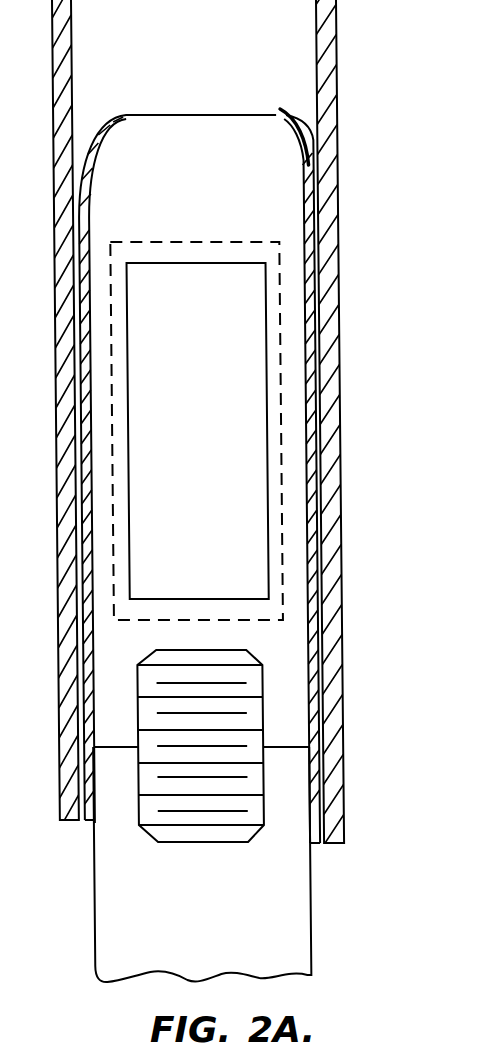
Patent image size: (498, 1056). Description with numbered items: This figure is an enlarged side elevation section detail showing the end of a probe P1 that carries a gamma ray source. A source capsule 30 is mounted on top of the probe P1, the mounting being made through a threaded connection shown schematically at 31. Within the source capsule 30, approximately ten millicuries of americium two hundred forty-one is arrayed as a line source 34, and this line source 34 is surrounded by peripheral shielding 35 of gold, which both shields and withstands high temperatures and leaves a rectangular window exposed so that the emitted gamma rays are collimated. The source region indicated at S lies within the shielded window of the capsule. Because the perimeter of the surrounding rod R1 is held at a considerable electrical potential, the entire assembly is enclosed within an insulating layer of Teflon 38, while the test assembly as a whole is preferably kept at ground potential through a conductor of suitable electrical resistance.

The source capsule 30 is at (277, 647).
The threaded connection 31 is at (203, 741).
The line source 34 is at (203, 566).
The peripheral shielding 35 is at (262, 291).
The insulating layer of Teflon 38 is at (296, 114).
The sample S is at (230, 354).
The rod R1 is at (327, 347).
The probe P1 is at (284, 920).